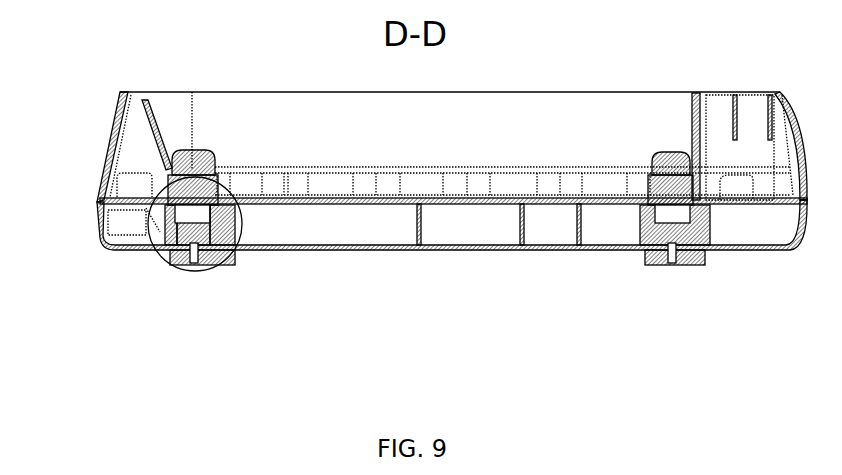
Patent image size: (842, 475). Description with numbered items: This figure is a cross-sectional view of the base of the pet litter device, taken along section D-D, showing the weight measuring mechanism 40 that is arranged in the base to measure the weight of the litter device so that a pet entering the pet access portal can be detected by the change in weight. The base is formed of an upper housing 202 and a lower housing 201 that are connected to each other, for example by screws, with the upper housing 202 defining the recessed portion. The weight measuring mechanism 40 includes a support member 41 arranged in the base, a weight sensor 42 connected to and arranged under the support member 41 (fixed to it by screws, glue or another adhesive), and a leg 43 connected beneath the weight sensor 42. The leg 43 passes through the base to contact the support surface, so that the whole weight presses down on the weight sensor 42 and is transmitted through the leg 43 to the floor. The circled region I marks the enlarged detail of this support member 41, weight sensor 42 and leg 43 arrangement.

The lower housing 201 is at (106, 148).
The upper housing 202 is at (97, 228).
The detail region I is at (147, 229).
The weight measuring mechanism 40 is at (287, 330).
The support member 41 is at (155, 238).
The weight sensor 42 is at (185, 227).
The leg 43 is at (212, 240).